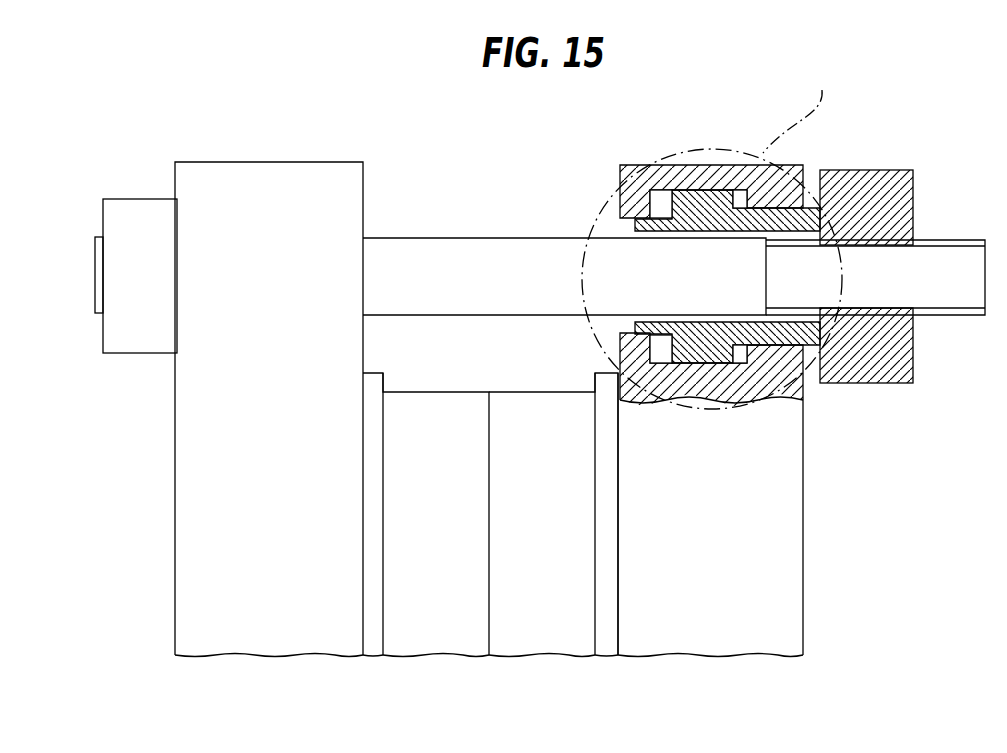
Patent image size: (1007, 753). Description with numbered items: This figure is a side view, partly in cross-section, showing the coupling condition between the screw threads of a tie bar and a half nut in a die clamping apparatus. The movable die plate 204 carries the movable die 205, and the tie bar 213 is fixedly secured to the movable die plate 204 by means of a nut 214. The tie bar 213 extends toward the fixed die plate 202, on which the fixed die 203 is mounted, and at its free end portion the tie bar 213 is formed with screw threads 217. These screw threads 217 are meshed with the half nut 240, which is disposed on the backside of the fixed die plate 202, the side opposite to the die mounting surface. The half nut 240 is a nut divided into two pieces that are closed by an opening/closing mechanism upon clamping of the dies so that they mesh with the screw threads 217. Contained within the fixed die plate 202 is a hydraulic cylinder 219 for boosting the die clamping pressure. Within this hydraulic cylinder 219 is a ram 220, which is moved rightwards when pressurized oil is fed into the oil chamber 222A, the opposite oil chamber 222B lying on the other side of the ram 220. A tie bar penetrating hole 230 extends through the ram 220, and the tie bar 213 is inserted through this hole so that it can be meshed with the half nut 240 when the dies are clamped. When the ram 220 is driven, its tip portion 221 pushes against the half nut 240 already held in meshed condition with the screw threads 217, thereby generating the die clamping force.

The fixed die plate 202 is at (782, 560).
The fixed die 203 is at (555, 620).
The movable die plate 204 is at (203, 563).
The movable die 205 is at (447, 627).
The tie bar 213 is at (442, 260).
The nut 214 is at (137, 199).
The screw threads 217 is at (957, 238).
The hydraulic cylinder 219 is at (803, 108).
The ram 220 is at (785, 347).
The tip portion 221 is at (827, 325).
The oil chamber 222A is at (663, 200).
The opposite oil chamber 222B is at (741, 197).
The tie bar penetrating hole 230 is at (640, 238).
The half nut 240 is at (888, 170).